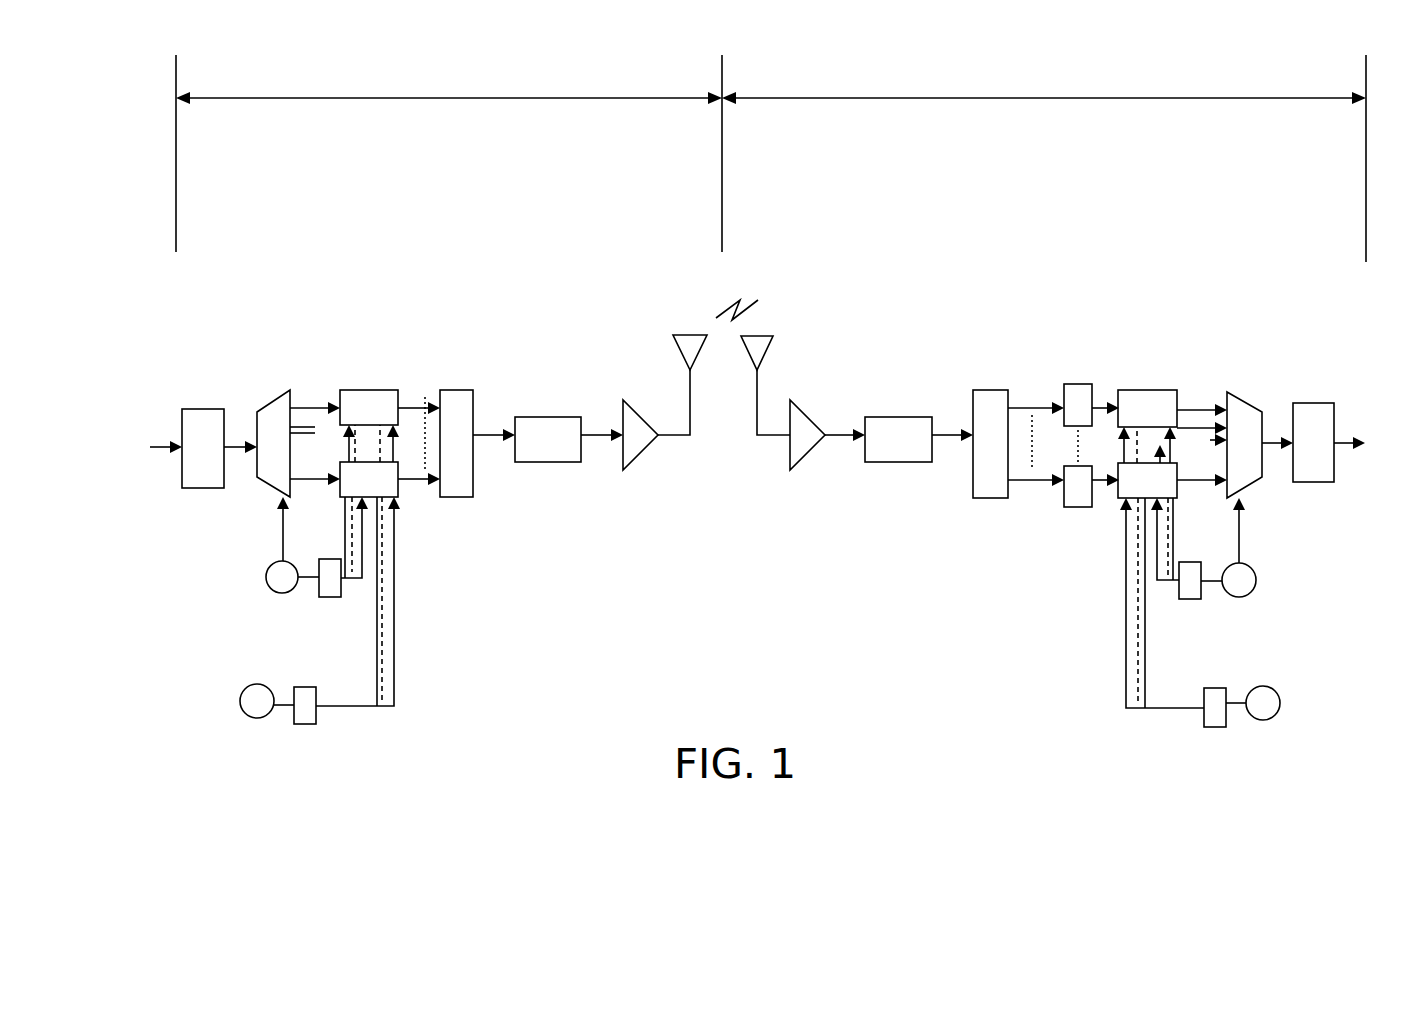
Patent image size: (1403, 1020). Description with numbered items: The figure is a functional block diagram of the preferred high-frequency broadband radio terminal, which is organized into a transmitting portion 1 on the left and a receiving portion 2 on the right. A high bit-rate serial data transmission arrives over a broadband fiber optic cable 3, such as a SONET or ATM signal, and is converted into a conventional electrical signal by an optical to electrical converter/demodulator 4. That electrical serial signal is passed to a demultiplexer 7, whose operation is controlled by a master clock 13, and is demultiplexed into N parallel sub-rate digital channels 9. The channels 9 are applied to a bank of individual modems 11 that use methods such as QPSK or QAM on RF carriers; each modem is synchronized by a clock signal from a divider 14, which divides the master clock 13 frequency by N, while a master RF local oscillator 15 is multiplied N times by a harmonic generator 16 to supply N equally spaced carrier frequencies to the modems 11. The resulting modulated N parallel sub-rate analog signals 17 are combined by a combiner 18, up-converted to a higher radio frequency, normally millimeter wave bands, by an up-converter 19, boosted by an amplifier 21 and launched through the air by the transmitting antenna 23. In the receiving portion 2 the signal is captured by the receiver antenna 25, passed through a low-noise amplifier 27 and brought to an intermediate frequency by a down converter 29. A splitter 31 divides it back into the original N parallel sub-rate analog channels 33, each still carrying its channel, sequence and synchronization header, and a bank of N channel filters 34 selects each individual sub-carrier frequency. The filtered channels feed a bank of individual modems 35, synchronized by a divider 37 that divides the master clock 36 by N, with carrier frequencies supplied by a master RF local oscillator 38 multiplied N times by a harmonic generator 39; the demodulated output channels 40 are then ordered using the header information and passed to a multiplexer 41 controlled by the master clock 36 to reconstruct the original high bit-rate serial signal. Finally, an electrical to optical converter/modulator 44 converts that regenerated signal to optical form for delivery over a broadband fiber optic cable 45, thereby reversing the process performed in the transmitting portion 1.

The transmitting portion 1 is at (449, 152).
The receiving portion 2 is at (1044, 157).
The broadband fiber optic cable 3 is at (170, 455).
The optical to electrical converter/demodulator 4 is at (205, 488).
The demultiplexer 7 is at (287, 398).
The parallel sub-rate digital channels 9 is at (325, 400).
The bank of individual modems 11 is at (387, 390).
The master clock 13 is at (282, 593).
The divider 14 is at (325, 597).
The master RF local oscillator 15 is at (258, 722).
The harmonic generator 16 is at (316, 724).
The modulated parallel sub-rate analog signals 17 is at (417, 402).
The combiner 18 is at (455, 497).
The up-converter 19 is at (552, 417).
The amplifier 21 is at (638, 413).
The transmitting antenna 23 is at (680, 335).
The receiver antenna 25 is at (767, 335).
The low-noise amplifier 27 is at (810, 452).
The down converter 29 is at (918, 417).
The splitter 31 is at (983, 498).
The parallel sub-rate analog channels 33 is at (1020, 400).
The bank of N channel filters 34 is at (1063, 387).
The bank of individual modems 35 is at (1132, 397).
The master clock 36 is at (1228, 597).
The divider 37 is at (1182, 599).
The master RF local oscillator 38 is at (1265, 720).
The harmonic generator 39 is at (1215, 727).
The demodulated data streams 40 is at (1185, 400).
The multiplexer 41 is at (1245, 400).
The electrical to optical converter/modulator 44 is at (1313, 482).
The broadband fiber optic cable 45 is at (1360, 433).